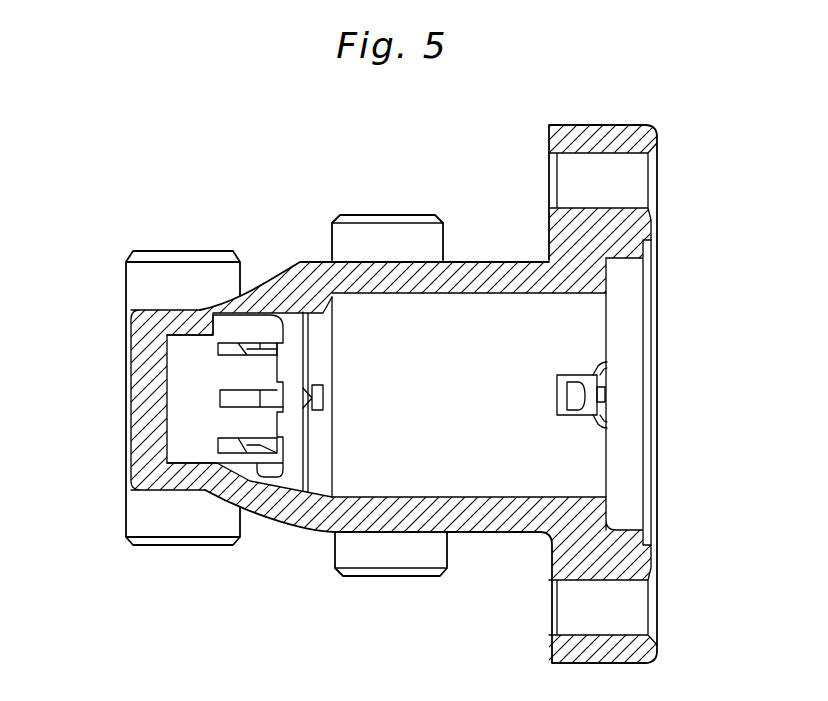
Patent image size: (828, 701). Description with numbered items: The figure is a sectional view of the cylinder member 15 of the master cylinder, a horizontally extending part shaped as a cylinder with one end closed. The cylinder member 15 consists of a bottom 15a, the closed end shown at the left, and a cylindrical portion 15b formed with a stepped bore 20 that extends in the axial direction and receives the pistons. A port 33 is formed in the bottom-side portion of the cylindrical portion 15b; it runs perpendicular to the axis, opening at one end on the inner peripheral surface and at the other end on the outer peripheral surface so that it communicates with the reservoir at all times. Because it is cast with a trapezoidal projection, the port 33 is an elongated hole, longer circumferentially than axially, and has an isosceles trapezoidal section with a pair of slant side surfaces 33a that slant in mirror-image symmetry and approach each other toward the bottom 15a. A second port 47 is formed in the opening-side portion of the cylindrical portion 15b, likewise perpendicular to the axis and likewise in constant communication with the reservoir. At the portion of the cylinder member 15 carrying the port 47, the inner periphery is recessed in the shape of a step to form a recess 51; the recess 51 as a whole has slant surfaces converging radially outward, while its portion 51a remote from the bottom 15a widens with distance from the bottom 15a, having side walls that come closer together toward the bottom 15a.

The cylinder member 15 is at (661, 234).
The bottom 15a is at (140, 349).
The cylindrical portion 15b is at (491, 525).
The stepped bore 20 is at (500, 297).
The port 33 is at (310, 398).
The slant side surfaces 33a is at (303, 392).
The port 47 is at (580, 395).
The recess 51 is at (590, 413).
The portion of the recess remote from the bottom 51a is at (598, 372).